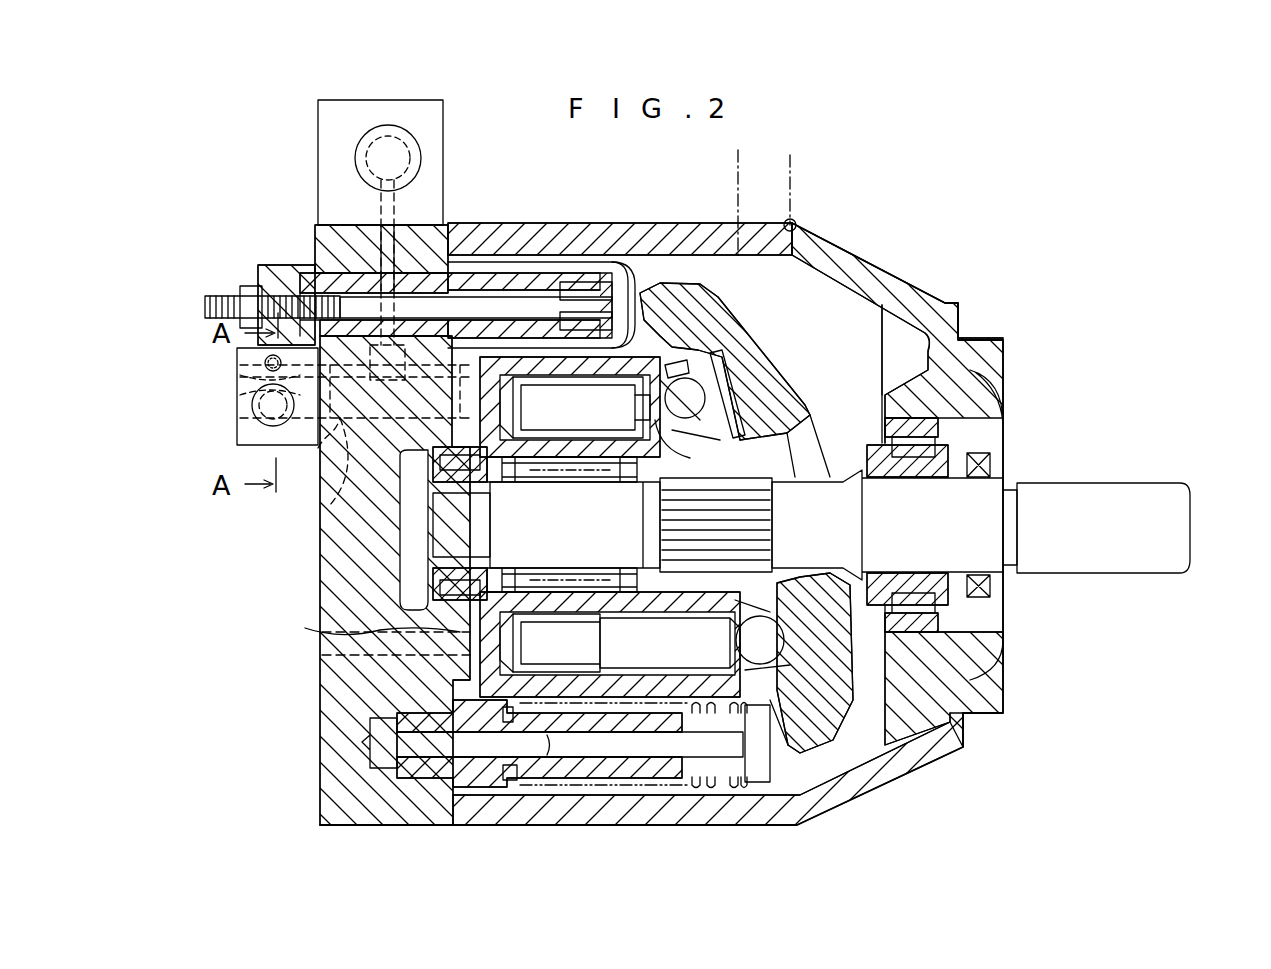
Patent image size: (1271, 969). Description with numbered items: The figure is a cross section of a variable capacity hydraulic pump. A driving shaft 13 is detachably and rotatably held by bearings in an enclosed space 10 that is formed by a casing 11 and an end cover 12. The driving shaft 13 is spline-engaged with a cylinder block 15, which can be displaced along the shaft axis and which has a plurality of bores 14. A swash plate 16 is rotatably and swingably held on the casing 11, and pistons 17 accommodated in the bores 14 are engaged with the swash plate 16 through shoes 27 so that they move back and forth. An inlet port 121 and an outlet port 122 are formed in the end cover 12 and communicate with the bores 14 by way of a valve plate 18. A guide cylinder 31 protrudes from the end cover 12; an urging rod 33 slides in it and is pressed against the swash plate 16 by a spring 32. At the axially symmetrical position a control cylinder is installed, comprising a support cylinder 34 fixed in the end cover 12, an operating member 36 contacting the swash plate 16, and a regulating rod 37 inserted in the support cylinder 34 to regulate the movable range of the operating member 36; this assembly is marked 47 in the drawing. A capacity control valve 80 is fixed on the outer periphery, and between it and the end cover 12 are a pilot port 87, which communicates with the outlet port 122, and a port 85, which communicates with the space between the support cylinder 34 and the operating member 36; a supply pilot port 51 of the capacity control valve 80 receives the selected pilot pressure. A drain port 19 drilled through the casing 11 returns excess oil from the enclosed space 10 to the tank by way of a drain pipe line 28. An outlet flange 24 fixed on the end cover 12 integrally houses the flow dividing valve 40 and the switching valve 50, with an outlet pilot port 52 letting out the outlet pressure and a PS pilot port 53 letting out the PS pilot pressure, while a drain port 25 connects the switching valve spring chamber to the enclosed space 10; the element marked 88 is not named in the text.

The enclosed space 10 is at (844, 339).
The casing 11 is at (712, 240).
The end cover 12 is at (322, 778).
The driving shaft 13 is at (1086, 497).
The bores 14 is at (552, 630).
The cylinder block 15 is at (655, 684).
The swash plate 16 is at (735, 330).
The pistons 17 is at (602, 378).
The valve plate 18 is at (305, 628).
The drain port 19 is at (796, 222).
The outlet flange 24 is at (237, 450).
The drain port 25 is at (408, 305).
The shoes 27 is at (738, 374).
The drain pipe line 28 is at (795, 178).
The guide cylinder 31 is at (612, 785).
The spring 32 is at (718, 790).
The urging rod 33 is at (762, 785).
The support cylinder 34 is at (552, 280).
The operating member 36 is at (493, 300).
The regulating rod 37 is at (535, 296).
The flow dividing valve 40 is at (242, 420).
The sleeve assembly 47 is at (541, 245).
The switching valve 50 is at (252, 362).
The supply pilot port 51 is at (355, 391).
The outlet pilot port 52 is at (310, 457).
The PS pilot port 53 is at (240, 378).
The capacity control valve 80 is at (384, 86).
The port 85 is at (378, 240).
The pilot port 87 is at (412, 313).
The plate 88 is at (320, 262).
The inlet port 121 is at (322, 655).
The outlet port 122 is at (330, 505).